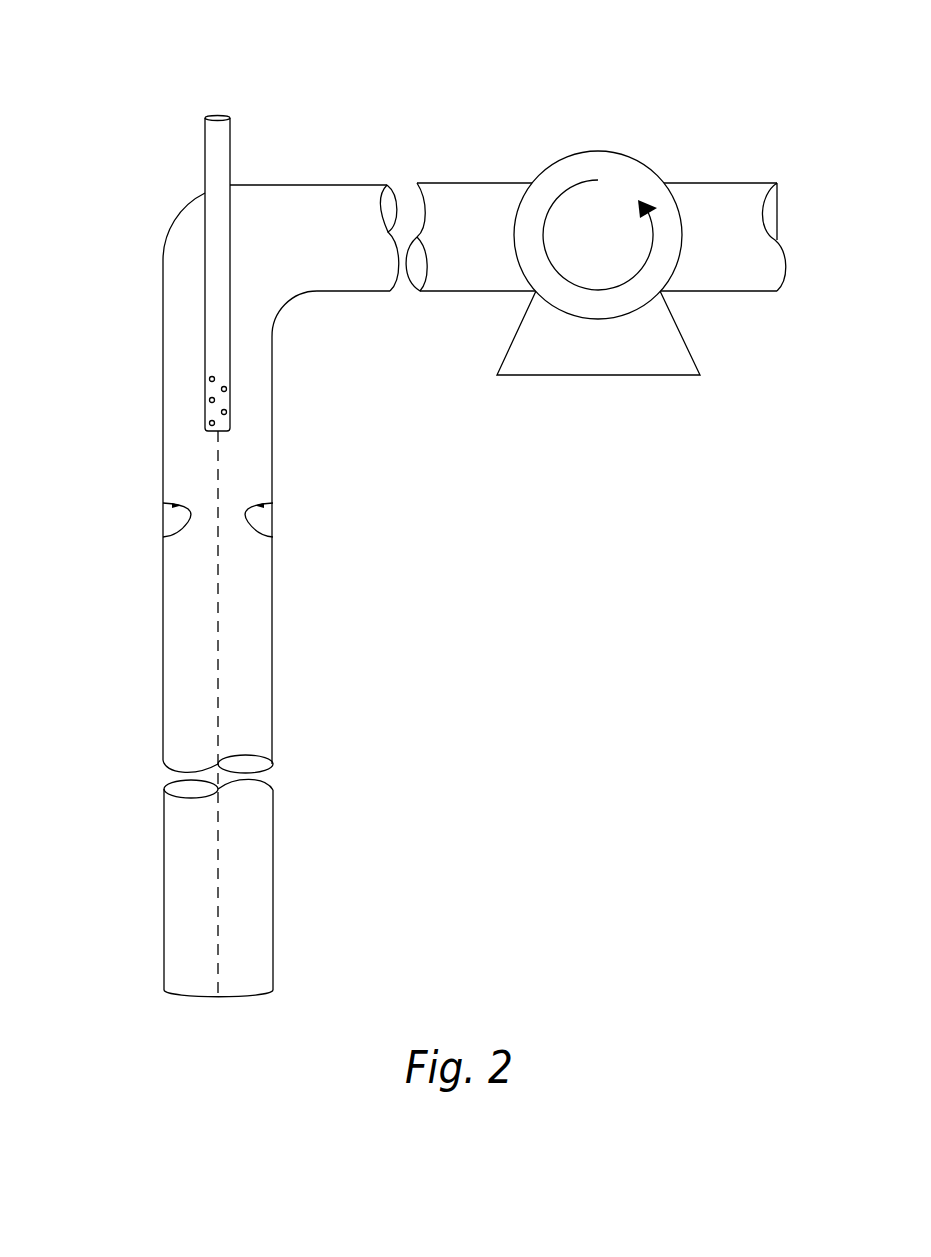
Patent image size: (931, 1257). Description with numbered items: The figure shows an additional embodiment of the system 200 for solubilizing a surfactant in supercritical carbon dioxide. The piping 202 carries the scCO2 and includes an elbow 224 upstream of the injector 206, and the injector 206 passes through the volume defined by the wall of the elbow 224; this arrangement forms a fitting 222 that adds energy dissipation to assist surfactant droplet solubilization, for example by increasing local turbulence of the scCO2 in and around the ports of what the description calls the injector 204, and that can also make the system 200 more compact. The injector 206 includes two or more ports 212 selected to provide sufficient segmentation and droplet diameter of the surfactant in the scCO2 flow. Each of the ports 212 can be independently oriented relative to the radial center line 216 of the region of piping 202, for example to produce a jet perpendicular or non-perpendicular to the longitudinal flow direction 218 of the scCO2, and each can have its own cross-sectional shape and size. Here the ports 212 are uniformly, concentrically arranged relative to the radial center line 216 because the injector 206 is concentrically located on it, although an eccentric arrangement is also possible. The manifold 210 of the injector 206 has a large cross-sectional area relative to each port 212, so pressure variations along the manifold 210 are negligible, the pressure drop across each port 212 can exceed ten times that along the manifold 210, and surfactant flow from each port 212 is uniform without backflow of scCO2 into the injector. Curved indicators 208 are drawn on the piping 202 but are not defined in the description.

The system 200 is at (118, 82).
The piping 202 is at (319, 185).
The injector 204 is at (637, 143).
The injector 206 is at (224, 151).
The rotation arrows 208 is at (163, 537).
The manifold 210 is at (222, 282).
The ports 212 is at (206, 419).
The radial center line 216 is at (214, 646).
The longitudinal flow direction 218 is at (183, 357).
The fitting 222 is at (204, 266).
The elbow 224 is at (176, 228).